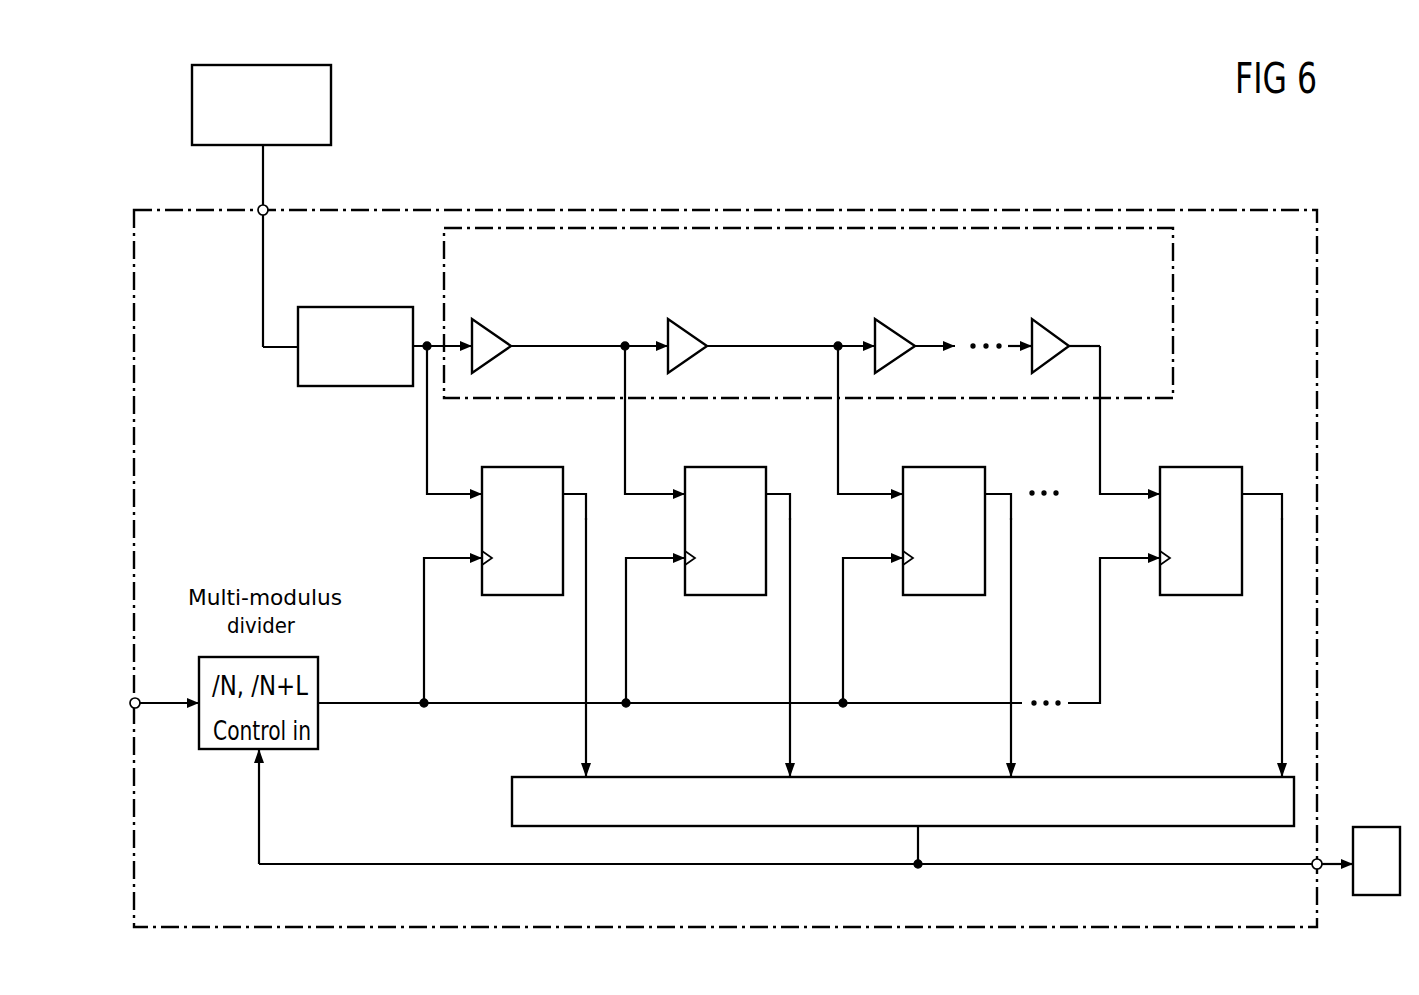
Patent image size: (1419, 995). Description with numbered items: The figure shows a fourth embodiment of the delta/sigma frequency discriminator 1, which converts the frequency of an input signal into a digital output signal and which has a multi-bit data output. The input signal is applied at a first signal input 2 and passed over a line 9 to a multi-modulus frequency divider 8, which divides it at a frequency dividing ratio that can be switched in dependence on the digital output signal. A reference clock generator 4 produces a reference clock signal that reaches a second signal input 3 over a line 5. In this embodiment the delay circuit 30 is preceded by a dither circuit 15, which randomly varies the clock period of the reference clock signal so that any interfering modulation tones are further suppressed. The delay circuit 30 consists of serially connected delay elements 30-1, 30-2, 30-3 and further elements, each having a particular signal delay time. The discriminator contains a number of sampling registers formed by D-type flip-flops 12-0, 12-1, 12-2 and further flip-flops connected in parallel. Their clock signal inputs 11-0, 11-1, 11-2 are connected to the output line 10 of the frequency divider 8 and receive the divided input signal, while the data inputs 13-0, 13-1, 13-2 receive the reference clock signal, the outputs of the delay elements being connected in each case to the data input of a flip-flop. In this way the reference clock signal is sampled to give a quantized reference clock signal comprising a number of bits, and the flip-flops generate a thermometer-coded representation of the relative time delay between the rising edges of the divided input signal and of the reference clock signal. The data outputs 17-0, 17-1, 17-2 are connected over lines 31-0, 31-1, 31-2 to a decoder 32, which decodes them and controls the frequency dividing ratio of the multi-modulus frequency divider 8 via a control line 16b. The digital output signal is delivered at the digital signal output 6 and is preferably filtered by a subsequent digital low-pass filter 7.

The delta/sigma frequency discriminator 1 is at (1027, 210).
The first signal input 2 is at (133, 708).
The second signal input 3 is at (268, 206).
The reference clock generator 4 is at (333, 112).
The line 5 is at (262, 170).
The digital signal output 6 is at (1318, 870).
The digital low-pass filter 7 is at (1378, 827).
The multi-modulus frequency divider 8 is at (250, 750).
The line 9 is at (166, 708).
The line 10 is at (418, 706).
The dither circuit 15 is at (356, 388).
The control line 16b is at (578, 866).
The delay circuit 30 is at (1173, 290).
The delay element 30-1 is at (494, 330).
The delay element 30-2 is at (690, 330).
The delay element 30-3 is at (897, 330).
The clock signal input 11-0 is at (480, 562).
The sampling register 12-0 is at (482, 538).
The data input 13-0 is at (482, 491).
The data output 17-0 is at (563, 491).
The clock signal input 11-1 is at (683, 562).
The sampling register 12-1 is at (685, 538).
The data input 13-1 is at (685, 491).
The data output 17-1 is at (766, 491).
The clock signal input 11-2 is at (901, 562).
The sampling register 12-2 is at (903, 538).
The data input 13-2 is at (903, 491).
The data output 17-2 is at (985, 491).
The flip-flop output line to decoder 31-0 is at (586, 718).
The flip-flop output line to decoder 31-1 is at (790, 718).
The flip-flop output line to decoder 31-2 is at (1011, 718).
The decoder 32 is at (920, 777).